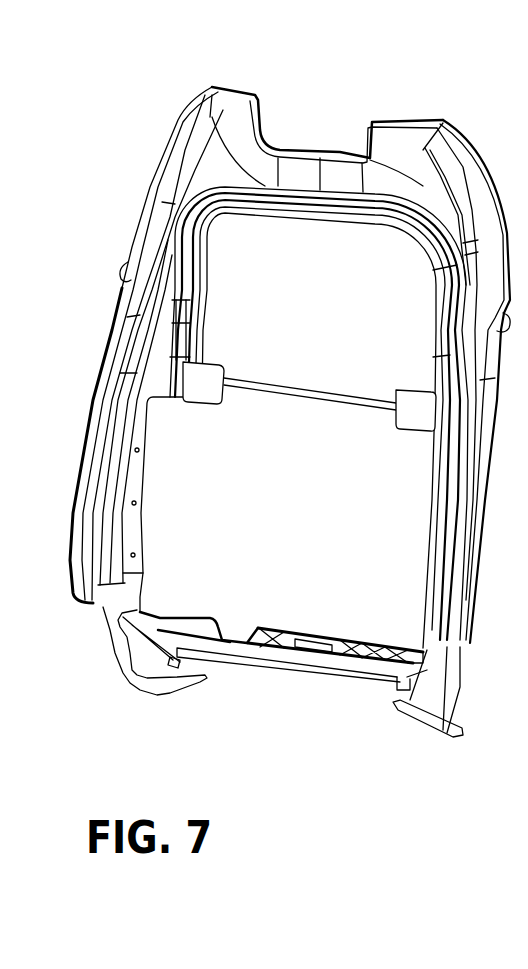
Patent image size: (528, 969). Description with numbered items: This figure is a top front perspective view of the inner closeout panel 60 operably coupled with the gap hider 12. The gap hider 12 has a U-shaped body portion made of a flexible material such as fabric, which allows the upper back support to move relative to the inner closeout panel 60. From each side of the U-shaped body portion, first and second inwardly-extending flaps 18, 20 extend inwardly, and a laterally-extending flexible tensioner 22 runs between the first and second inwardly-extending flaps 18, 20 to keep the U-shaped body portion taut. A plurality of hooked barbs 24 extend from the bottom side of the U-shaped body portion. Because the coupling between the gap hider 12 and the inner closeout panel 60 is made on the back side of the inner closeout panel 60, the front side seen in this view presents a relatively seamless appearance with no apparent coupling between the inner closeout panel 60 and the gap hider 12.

The inner closeout panel 60 is at (470, 180).
The hooked barbs 24 is at (330, 222).
The gap hider 12 is at (205, 257).
The second inwardly-extending flap 20 is at (200, 398).
The tensioner 22 is at (292, 398).
The first inwardly-extending flap 18 is at (411, 420).